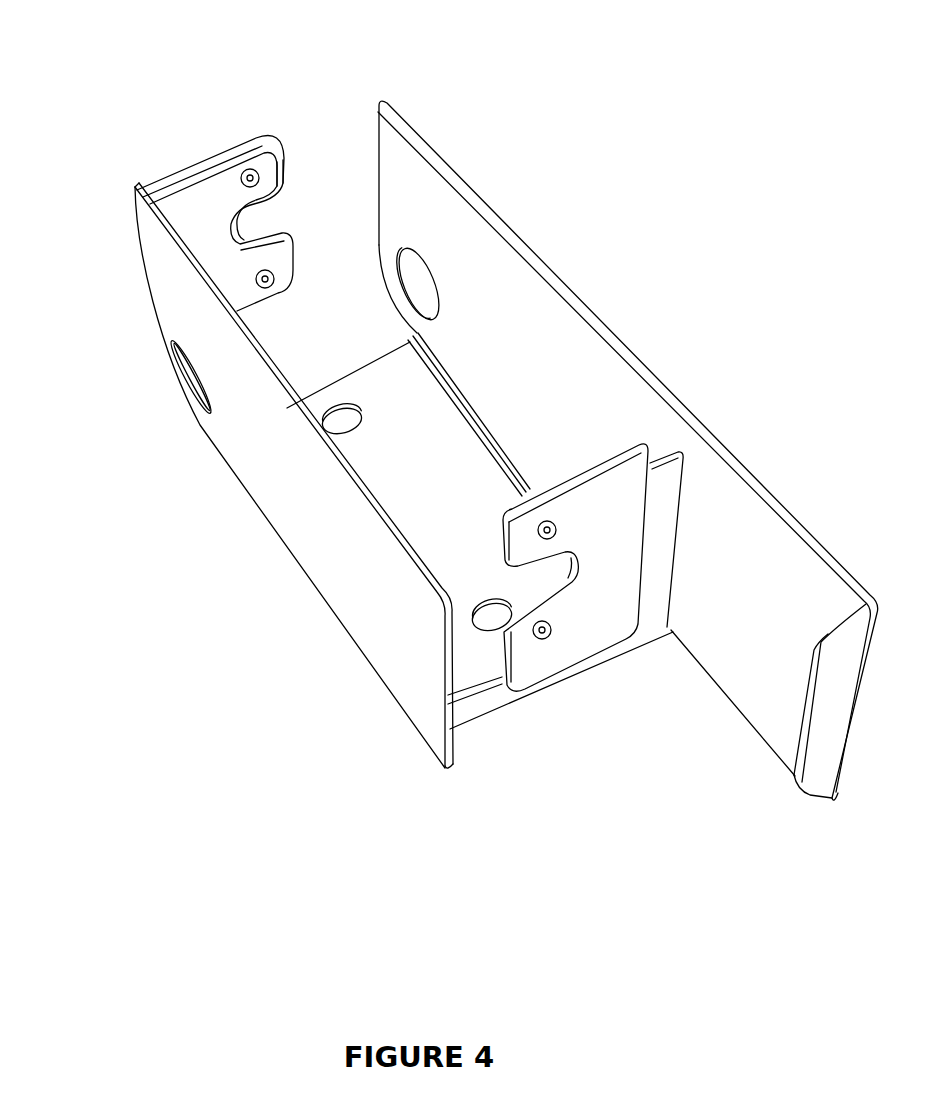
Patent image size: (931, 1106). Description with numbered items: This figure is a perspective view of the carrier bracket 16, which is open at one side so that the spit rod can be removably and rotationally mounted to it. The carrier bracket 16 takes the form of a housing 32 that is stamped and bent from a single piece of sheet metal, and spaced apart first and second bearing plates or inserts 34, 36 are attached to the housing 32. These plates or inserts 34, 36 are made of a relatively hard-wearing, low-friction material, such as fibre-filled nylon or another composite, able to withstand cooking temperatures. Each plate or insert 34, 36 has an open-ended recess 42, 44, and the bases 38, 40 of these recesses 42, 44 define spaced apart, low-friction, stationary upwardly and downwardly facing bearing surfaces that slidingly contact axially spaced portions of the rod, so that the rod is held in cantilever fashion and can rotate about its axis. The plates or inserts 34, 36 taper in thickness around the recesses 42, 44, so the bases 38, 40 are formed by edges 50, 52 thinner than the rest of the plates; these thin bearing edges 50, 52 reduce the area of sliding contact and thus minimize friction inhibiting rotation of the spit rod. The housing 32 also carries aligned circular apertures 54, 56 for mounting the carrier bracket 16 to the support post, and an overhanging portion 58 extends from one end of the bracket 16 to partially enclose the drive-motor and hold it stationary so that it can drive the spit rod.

The carrier bracket 16 is at (145, 818).
The housing 32 is at (332, 619).
The first bearing plate or insert 34 is at (607, 622).
The second bearing plate or insert 36 is at (207, 200).
The base of recess 38 is at (550, 575).
The base of recess 40 is at (238, 227).
The open-ended recess 42 is at (505, 597).
The open-ended recess 44 is at (283, 212).
The bearing edge 50 is at (558, 645).
The bearing edge 52 is at (227, 238).
The circular aperture 54 is at (193, 393).
The circular aperture 56 is at (422, 282).
The overhanging portion 58 is at (836, 565).